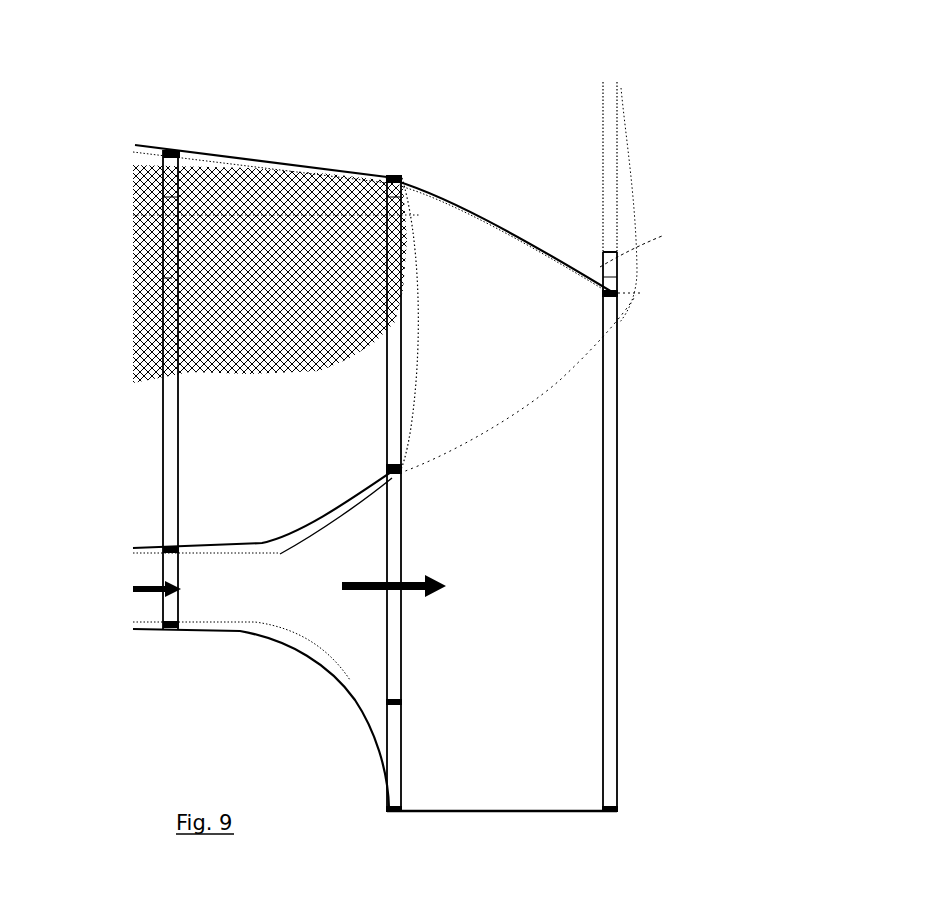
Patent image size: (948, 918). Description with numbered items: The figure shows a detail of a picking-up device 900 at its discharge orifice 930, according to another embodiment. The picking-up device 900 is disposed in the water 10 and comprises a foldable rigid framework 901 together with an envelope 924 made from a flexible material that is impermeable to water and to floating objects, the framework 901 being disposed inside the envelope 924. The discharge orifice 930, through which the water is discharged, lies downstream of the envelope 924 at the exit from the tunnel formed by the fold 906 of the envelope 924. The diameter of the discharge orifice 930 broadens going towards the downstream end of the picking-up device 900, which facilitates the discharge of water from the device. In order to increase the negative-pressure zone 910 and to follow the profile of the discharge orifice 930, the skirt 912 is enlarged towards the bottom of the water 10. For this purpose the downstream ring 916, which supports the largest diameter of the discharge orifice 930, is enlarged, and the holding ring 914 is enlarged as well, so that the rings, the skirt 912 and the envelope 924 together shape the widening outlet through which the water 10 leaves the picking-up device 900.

The picking-up device 900 is at (803, 132).
The water 10 is at (669, 232).
The foldable rigid framework 901 is at (258, 624).
The fold 906 is at (257, 542).
The negative-pressure zone 910 is at (521, 341).
The skirt 912 is at (510, 230).
The holding ring 914 is at (612, 571).
The downstream ring 916 is at (392, 769).
The envelope 924 is at (333, 172).
The discharge orifice 930 is at (363, 622).